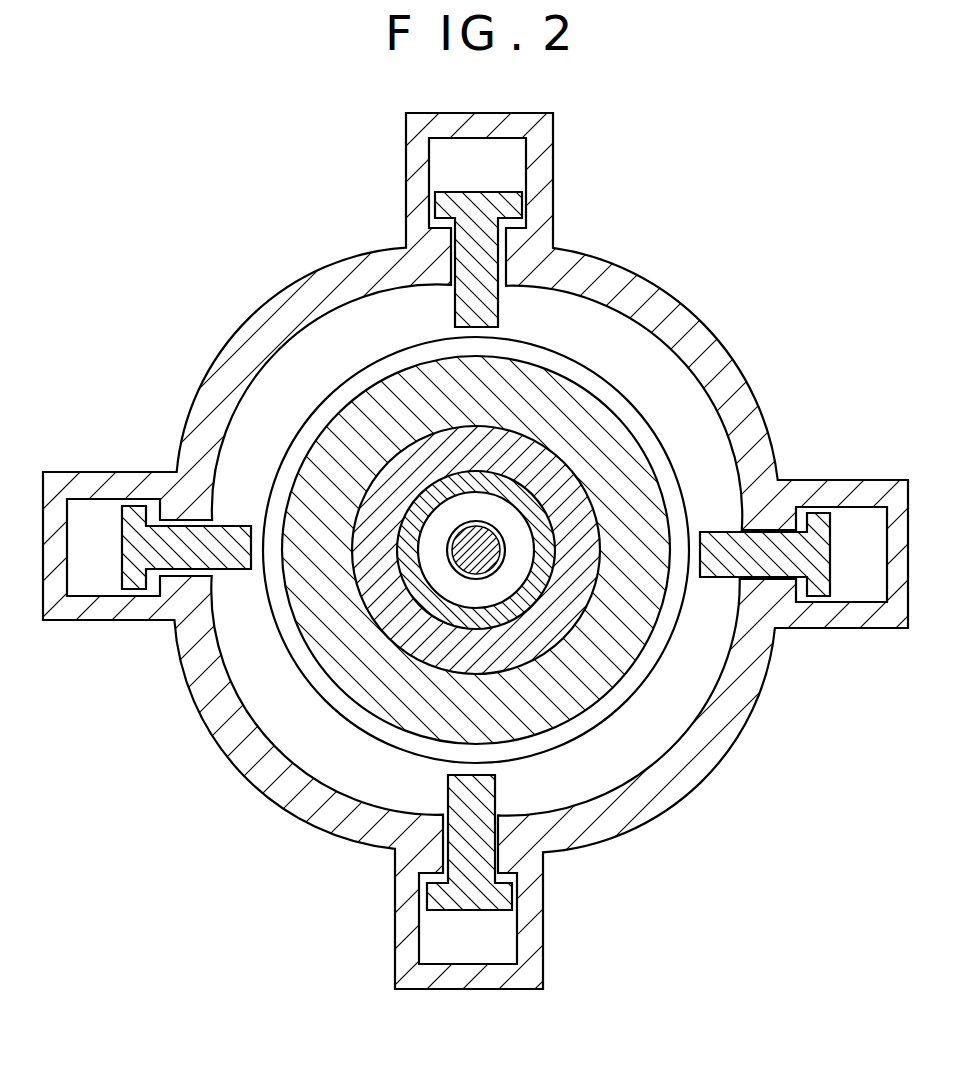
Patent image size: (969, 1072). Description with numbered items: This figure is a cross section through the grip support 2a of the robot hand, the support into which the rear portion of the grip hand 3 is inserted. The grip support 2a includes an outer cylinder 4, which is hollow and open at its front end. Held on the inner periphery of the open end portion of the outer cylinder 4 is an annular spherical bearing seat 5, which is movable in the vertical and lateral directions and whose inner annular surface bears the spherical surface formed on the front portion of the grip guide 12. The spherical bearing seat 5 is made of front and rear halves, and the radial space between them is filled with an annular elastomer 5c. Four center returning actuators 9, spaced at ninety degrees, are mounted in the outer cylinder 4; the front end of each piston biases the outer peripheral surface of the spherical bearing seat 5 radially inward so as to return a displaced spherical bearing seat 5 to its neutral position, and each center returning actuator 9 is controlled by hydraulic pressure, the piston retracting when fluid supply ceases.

The grip support 2a is at (278, 828).
The grip hand 3 is at (550, 483).
The outer cylinder 4 is at (352, 276).
The spherical bearing seat 5 is at (298, 432).
The annular elastomer 5c is at (363, 425).
The center returning actuator 9 is at (493, 255).
The grip guide 12 is at (530, 450).